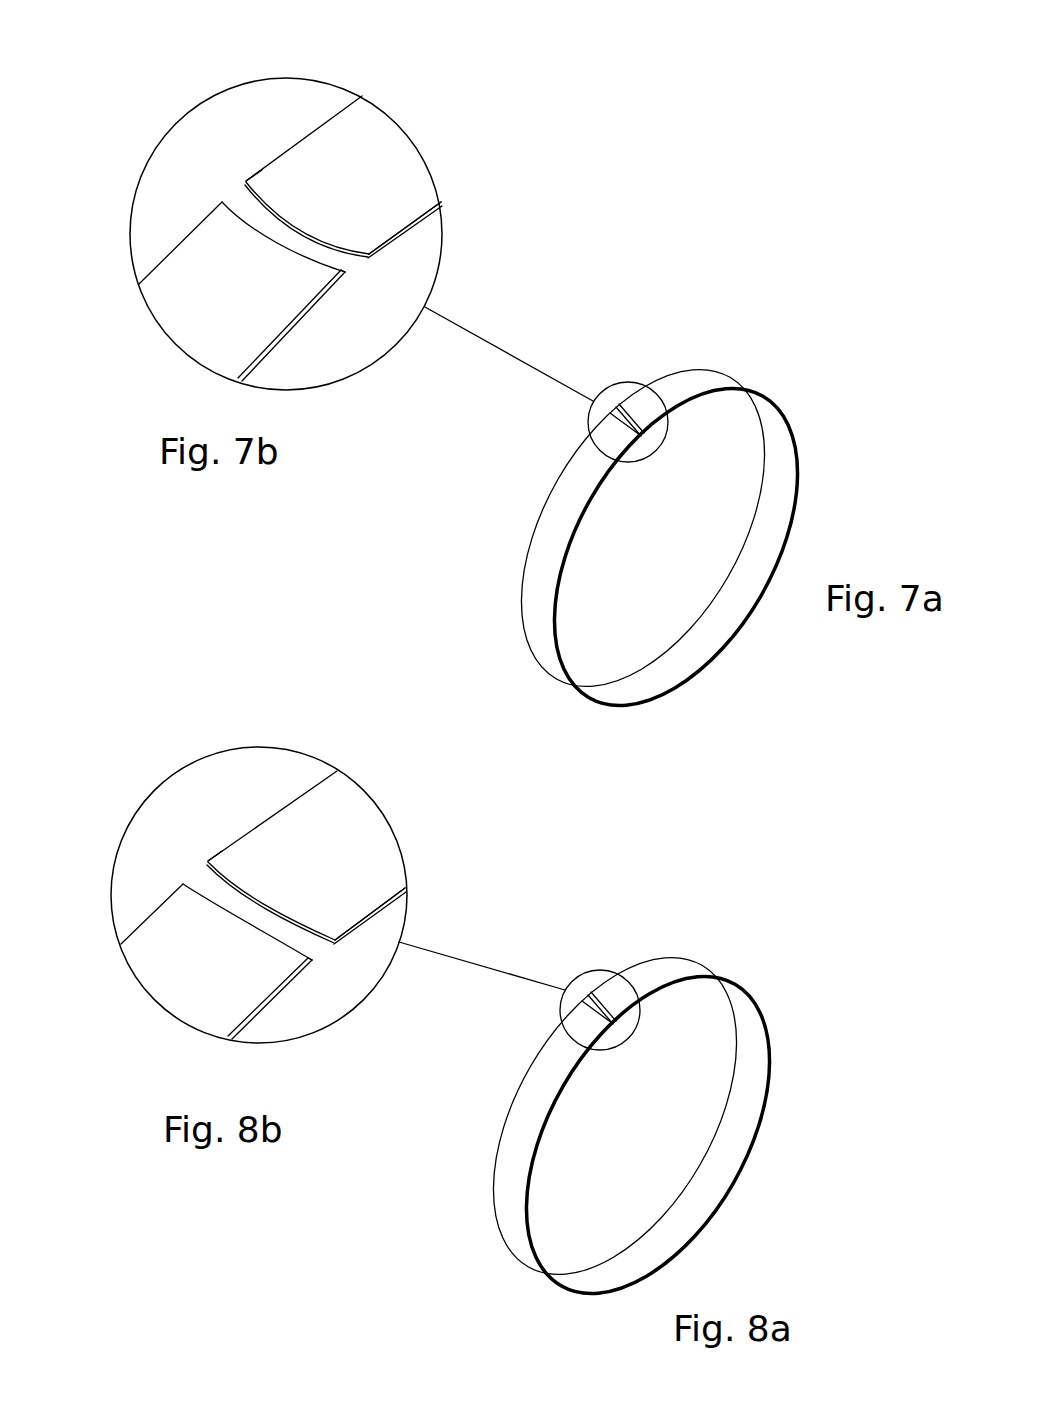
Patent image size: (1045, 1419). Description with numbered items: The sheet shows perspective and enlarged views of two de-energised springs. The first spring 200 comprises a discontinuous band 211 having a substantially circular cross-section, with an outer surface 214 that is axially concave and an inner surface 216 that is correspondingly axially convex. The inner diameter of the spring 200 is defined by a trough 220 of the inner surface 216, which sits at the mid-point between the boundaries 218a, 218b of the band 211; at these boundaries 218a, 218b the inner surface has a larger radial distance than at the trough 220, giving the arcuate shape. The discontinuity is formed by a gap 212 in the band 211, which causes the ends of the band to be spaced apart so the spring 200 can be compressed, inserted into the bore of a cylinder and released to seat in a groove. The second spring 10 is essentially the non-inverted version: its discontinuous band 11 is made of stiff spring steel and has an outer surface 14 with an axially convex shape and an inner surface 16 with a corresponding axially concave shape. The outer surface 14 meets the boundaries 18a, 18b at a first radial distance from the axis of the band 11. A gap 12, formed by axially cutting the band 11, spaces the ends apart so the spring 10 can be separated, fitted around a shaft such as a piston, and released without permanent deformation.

In FIG. 7A, the spring 200 is at (773, 328).
In FIG. 7B, the discontinuous band 211 is at (389, 147).
In FIG. 7A, the discontinuous band 211 is at (541, 571).
In FIG. 7B, the boundary 218a is at (254, 177).
In FIG. 7B, the boundary 218b is at (377, 244).
In FIG. 7B, the trough 220 is at (278, 252).
In FIG. 7B, the gap 212 is at (343, 262).
In FIG. 7A, the inner surface 216 is at (710, 627).
In FIG. 7A, the outer surface 214 is at (546, 676).
In FIG. 8A, the spring 10 is at (794, 981).
In FIG. 8B, the discontinuous band 11 is at (361, 833).
In FIG. 8A, the discontinuous band 11 is at (515, 1197).
In FIG. 8B, the boundary 18a is at (224, 843).
In FIG. 8B, the boundary 18b is at (359, 922).
In FIG. 8B, the gap 12 is at (319, 940).
In FIG. 8A, the inner surface 16 is at (709, 1177).
In FIG. 8A, the outer surface 14 is at (524, 1282).